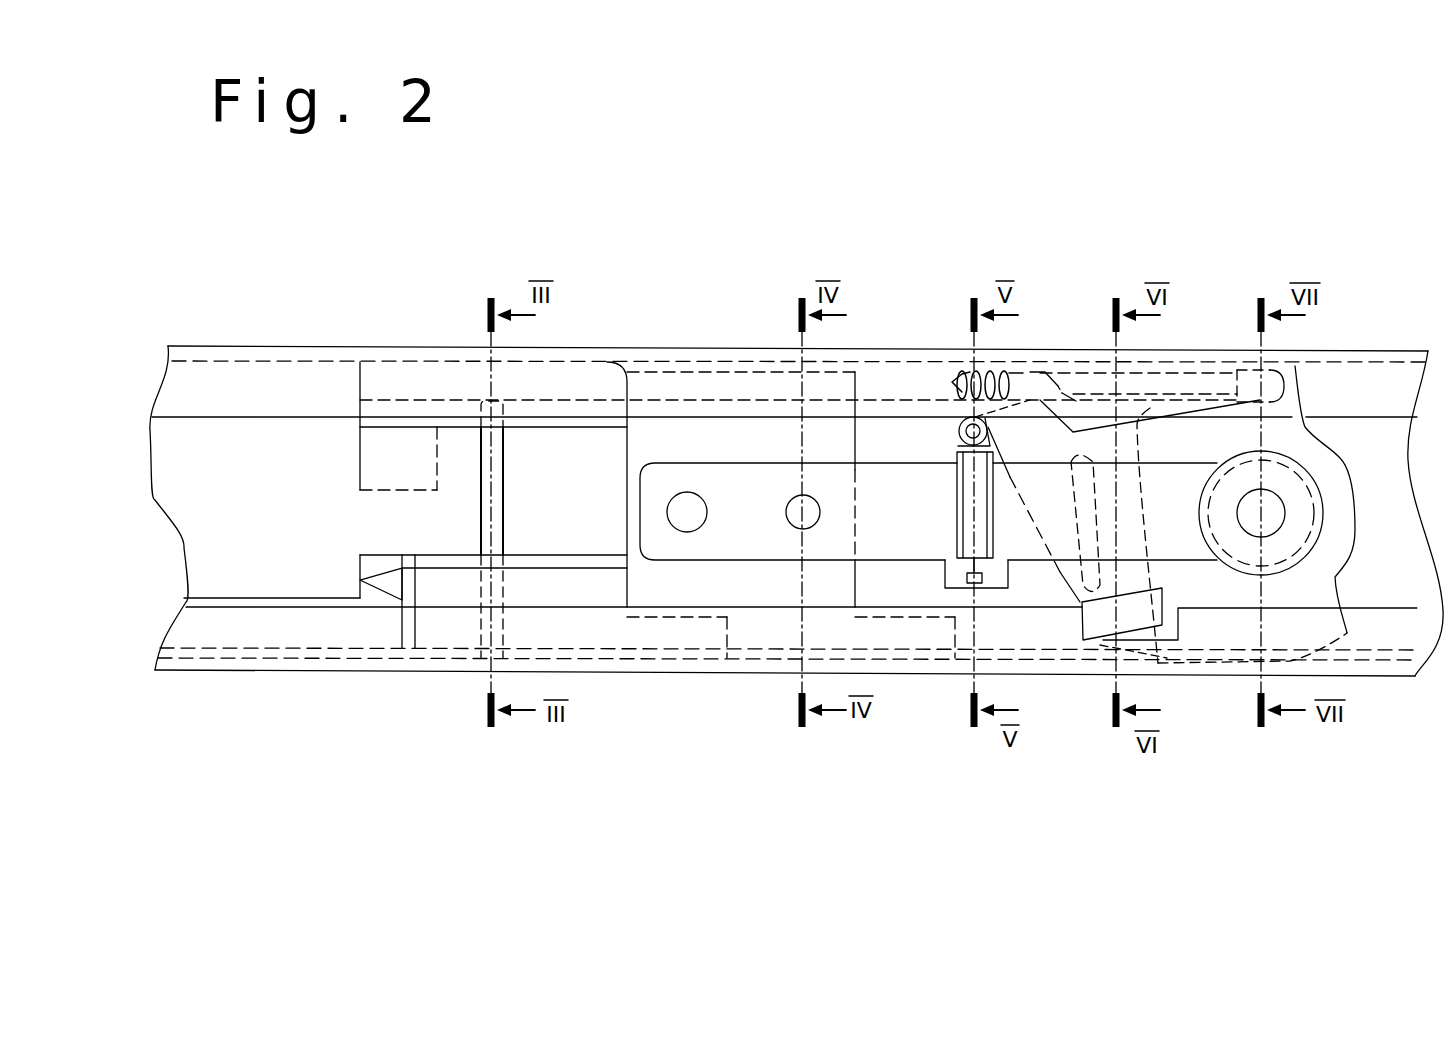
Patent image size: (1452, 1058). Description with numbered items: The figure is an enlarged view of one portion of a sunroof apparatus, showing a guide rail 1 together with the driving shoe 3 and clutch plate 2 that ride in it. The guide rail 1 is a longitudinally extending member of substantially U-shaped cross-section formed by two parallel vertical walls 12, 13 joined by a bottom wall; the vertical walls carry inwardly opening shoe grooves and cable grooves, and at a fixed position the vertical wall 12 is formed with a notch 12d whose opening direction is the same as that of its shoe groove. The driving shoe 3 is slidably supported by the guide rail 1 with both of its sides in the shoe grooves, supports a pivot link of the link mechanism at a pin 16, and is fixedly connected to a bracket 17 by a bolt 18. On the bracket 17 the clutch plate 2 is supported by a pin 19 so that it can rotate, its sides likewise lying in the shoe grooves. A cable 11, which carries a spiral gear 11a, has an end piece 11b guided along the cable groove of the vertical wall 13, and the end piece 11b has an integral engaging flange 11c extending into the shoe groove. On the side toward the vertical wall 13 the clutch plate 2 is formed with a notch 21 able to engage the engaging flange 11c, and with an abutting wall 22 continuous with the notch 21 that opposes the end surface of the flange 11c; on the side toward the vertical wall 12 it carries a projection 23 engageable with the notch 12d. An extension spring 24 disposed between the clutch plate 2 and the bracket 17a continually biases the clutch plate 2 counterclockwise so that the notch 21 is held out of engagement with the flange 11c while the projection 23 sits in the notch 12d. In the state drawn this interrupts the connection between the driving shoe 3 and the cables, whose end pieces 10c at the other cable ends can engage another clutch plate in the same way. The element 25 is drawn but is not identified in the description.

The guide rail 1 is at (293, 346).
The clutch plate 2 is at (1340, 445).
The driving shoe 3 is at (720, 437).
The end piece 10c is at (1148, 249).
The cable 11 is at (962, 371).
The spiral gear 11a is at (997, 372).
The end piece 11b is at (1037, 398).
The engaging flange 11c is at (1140, 368).
The vertical wall 12 is at (1022, 645).
The notch 12d is at (1168, 625).
The vertical wall 13 is at (888, 396).
The pin 16 is at (483, 510).
The bracket 17 is at (893, 530).
The bracket 17a is at (957, 563).
The bolt 18 is at (798, 520).
The pin 19 is at (1252, 520).
The notch 21 is at (1158, 645).
The abutting wall 22 is at (1295, 368).
The projection 23 is at (1097, 617).
The spring 24 is at (960, 512).
The pivot pin 25 is at (960, 432).